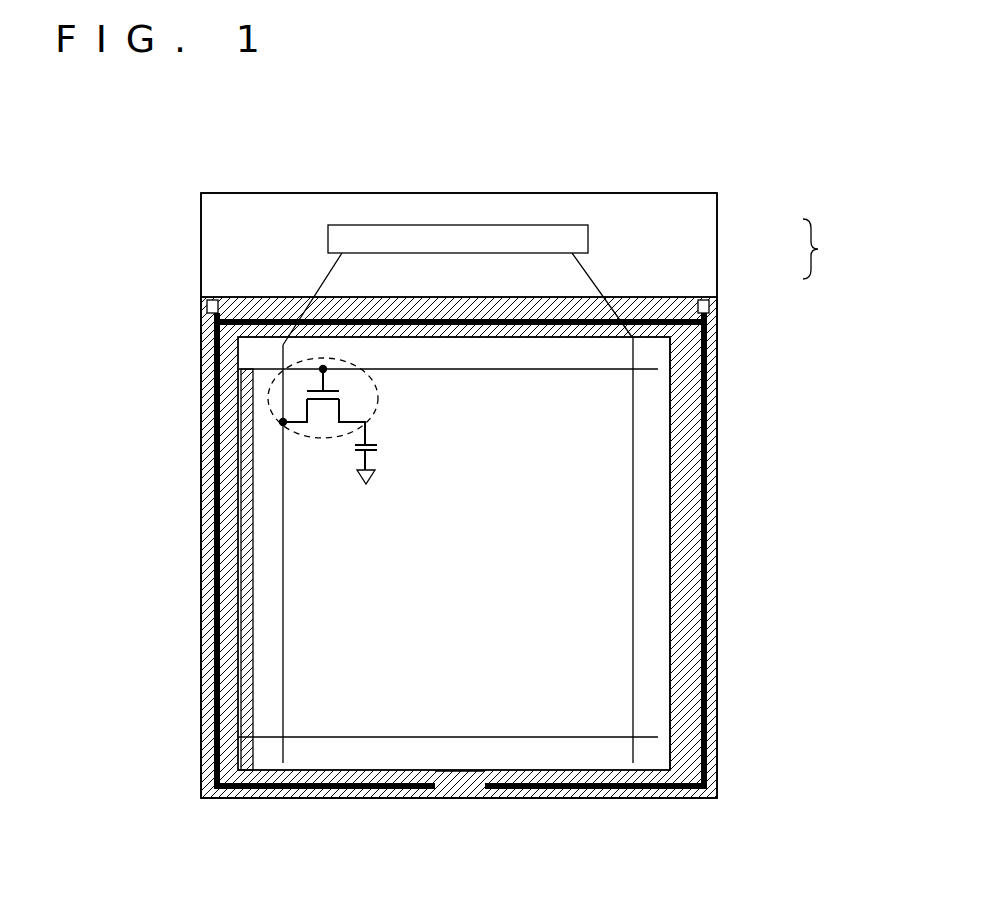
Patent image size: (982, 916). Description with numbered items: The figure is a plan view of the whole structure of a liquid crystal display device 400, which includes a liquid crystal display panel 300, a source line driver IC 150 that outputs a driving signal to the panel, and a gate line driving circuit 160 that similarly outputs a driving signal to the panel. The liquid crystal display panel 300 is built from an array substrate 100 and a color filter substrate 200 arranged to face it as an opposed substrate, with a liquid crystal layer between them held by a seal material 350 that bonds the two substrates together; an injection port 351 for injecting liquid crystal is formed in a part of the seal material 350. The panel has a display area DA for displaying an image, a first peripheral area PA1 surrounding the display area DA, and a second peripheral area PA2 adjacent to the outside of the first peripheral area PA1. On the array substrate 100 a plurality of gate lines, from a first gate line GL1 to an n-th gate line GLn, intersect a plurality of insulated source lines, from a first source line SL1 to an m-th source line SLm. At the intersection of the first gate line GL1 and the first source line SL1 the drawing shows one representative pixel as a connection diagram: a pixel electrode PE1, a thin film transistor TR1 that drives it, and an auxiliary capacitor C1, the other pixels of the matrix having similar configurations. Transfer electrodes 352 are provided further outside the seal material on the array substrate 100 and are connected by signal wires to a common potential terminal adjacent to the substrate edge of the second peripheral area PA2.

The liquid crystal display device 400 is at (457, 164).
The liquid crystal display panel 300 is at (833, 249).
The array substrate 100 is at (717, 238).
The color filter substrate 200 is at (717, 328).
The source line driver IC 150 is at (500, 240).
The gate line driving circuit 160 is at (217, 458).
The seal material 350 is at (332, 798).
The injection port 351 is at (455, 798).
The transfer electrodes 352 is at (212, 299).
The first peripheral area PA1 is at (690, 727).
The second peripheral area PA2 is at (307, 207).
The display area DA is at (617, 614).
The first gate line GL1 is at (448, 387).
The n-th gate line GLn is at (448, 721).
The first source line SL1 is at (308, 554).
The m-th source line SLm is at (611, 550).
The pixel electrode PE1 is at (373, 414).
The thin film transistor TR1 is at (323, 438).
The auxiliary capacitor C1 is at (377, 447).